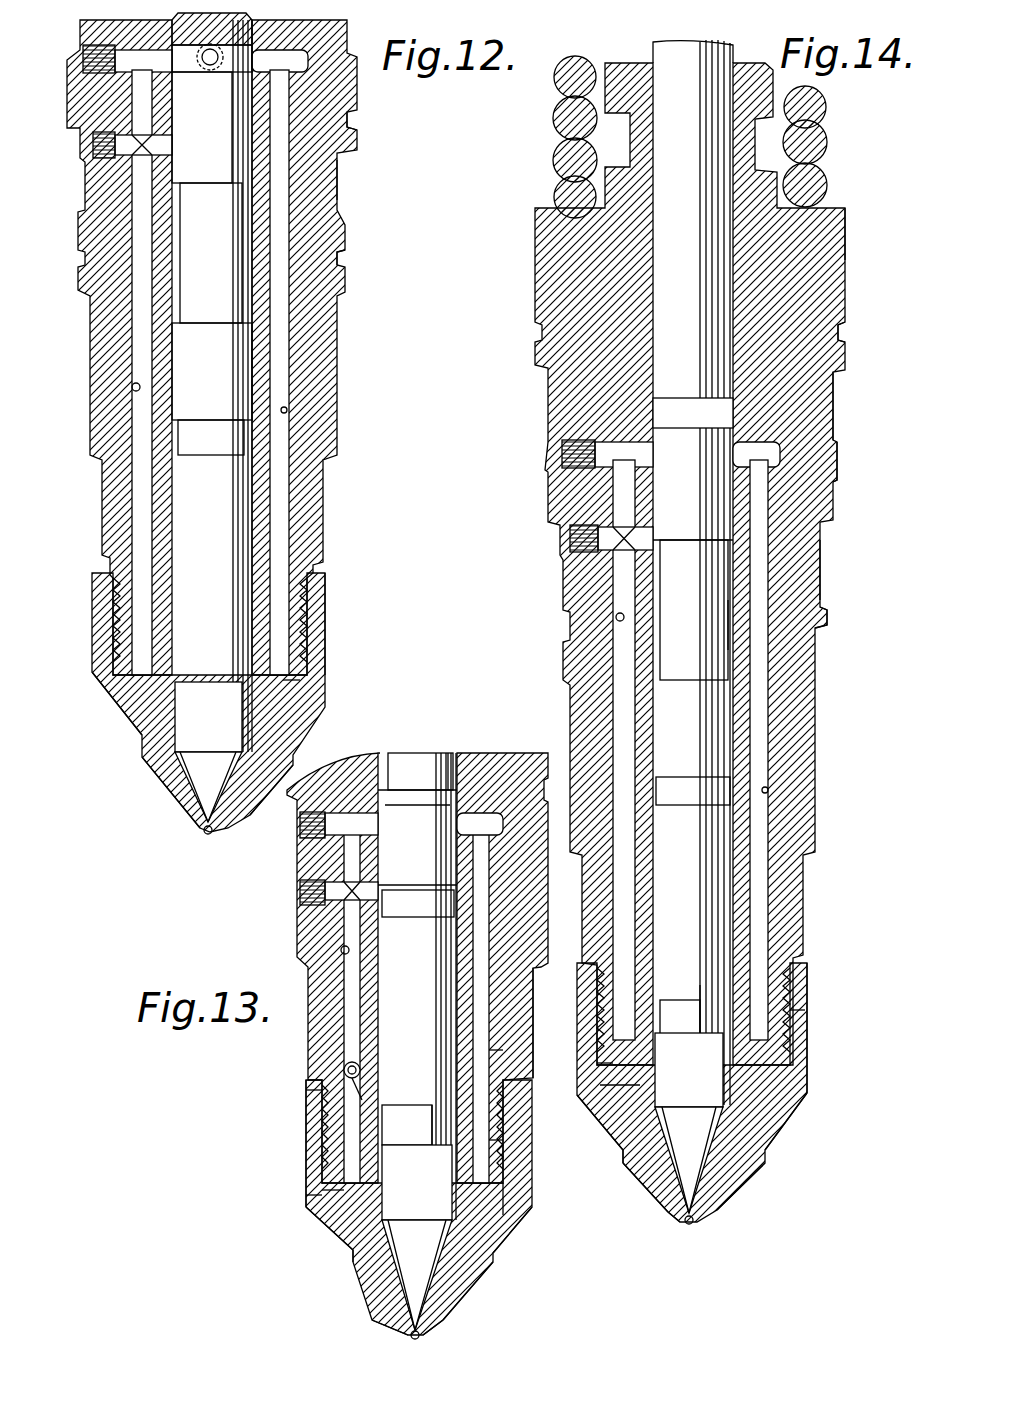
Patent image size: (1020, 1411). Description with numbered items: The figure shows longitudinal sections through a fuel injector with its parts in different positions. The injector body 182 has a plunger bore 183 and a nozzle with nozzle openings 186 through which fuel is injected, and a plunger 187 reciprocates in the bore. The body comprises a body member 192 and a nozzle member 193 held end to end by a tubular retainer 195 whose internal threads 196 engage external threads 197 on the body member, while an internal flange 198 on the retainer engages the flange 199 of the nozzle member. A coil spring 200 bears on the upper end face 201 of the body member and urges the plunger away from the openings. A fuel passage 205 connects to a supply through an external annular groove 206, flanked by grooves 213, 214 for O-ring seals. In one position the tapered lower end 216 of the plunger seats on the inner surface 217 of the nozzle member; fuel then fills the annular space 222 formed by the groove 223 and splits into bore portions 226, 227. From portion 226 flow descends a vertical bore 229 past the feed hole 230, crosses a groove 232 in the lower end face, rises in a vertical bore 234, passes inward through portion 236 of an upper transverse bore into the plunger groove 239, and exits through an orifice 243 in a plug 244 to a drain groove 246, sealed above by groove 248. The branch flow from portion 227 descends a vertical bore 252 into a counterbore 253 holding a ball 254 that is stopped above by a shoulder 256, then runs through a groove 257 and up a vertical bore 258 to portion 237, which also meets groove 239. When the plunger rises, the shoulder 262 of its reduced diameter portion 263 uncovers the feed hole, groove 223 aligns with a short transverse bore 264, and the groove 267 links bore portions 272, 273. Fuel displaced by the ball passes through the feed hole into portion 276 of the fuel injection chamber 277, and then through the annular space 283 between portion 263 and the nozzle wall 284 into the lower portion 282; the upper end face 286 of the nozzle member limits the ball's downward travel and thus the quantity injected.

In FIG. 12, the injector body 182 is at (338, 362).
In FIG. 14, the injector body 182 is at (818, 750).
In FIG. 13, the injector body 182 is at (505, 745).
In FIG. 12, the plunger bore 183 is at (177, 607).
In FIG. 14, the plunger bore 183 is at (655, 313).
In FIG. 13, the plunger bore 183 is at (390, 1030).
In FIG. 12, the nozzle openings 186 is at (205, 830).
In FIG. 14, the nozzle openings 186 is at (688, 1226).
In FIG. 13, the nozzle openings 186 is at (410, 1335).
In FIG. 12, the plunger 187 is at (262, 530).
In FIG. 14, the plunger 187 is at (807, 750).
In FIG. 13, the plunger 187 is at (500, 1025).
In FIG. 12, the body member 192 is at (105, 215).
In FIG. 14, the body member 192 is at (545, 388).
In FIG. 13, the body member 192 is at (320, 1005).
In FIG. 12, the nozzle member 193 is at (143, 785).
In FIG. 14, the nozzle member 193 is at (650, 1185).
In FIG. 13, the nozzle member 193 is at (475, 1300).
In FIG. 12, the tubular retainer 195 is at (320, 660).
In FIG. 14, the tubular retainer 195 is at (795, 1050).
In FIG. 13, the tubular retainer 195 is at (322, 1190).
In FIG. 12, the internal threads 196 is at (107, 650).
In FIG. 14, the internal threads 196 is at (790, 1040).
In FIG. 13, the internal threads 196 is at (306, 1140).
In FIG. 12, the external threads 197 is at (300, 648).
In FIG. 14, the external threads 197 is at (790, 1070).
In FIG. 13, the external threads 197 is at (322, 1152).
In FIG. 12, the internal flange 198 is at (130, 730).
In FIG. 14, the internal flange 198 is at (778, 1120).
In FIG. 13, the internal flange 198 is at (330, 1230).
In FIG. 12, the flange 199 is at (130, 690).
In FIG. 14, the flange 199 is at (790, 1085).
In FIG. 13, the flange 199 is at (503, 1200).
In FIG. 14, the coil spring 200 is at (555, 120).
In FIG. 14, the upper end face 201 is at (848, 212).
In FIG. 13, the fuel passage 205 is at (505, 945).
In FIG. 12, the external annular groove 206 is at (338, 175).
In FIG. 14, the external annular groove 206 is at (820, 573).
In FIG. 12, the annular groove 213 is at (345, 256).
In FIG. 14, the annular groove 213 is at (825, 652).
In FIG. 12, the annular groove 214 is at (357, 100).
In FIG. 14, the annular groove 214 is at (840, 495).
In FIG. 12, the tapered lower end 216 is at (205, 775).
In FIG. 14, the tapered lower end 216 is at (720, 1170).
In FIG. 13, the tapered lower end 216 is at (405, 1245).
In FIG. 12, the inner surface 217 is at (245, 817).
In FIG. 14, the inner surface 217 is at (738, 1200).
In FIG. 13, the inner surface 217 is at (455, 1318).
In FIG. 12, the annular space 222 is at (182, 208).
In FIG. 14, the annular space 222 is at (662, 585).
In FIG. 13, the annular space 222 is at (388, 760).
In FIG. 12, the annular groove 223 is at (243, 230).
In FIG. 14, the annular groove 223 is at (725, 612).
In FIG. 13, the annular groove 223 is at (448, 758).
In FIG. 13, the transverse bore portion 226 is at (417, 800).
In FIG. 13, the transverse bore portion 227 is at (400, 822).
In FIG. 13, the vertical bore 229 is at (492, 1055).
In FIG. 13, the feed hole 230 is at (503, 1148).
In FIG. 12, the groove 232 is at (290, 685).
In FIG. 14, the groove 232 is at (800, 1018).
In FIG. 12, the vertical bore 234 is at (287, 410).
In FIG. 14, the vertical bore 234 is at (768, 790).
In FIG. 12, the transverse bore portion 236 is at (300, 50).
In FIG. 14, the transverse bore portion 236 is at (760, 450).
In FIG. 12, the transverse bore portion 237 is at (135, 50).
In FIG. 14, the transverse bore portion 237 is at (590, 445).
In FIG. 13, the transverse bore portion 237 is at (339, 825).
In FIG. 12, the annular groove 239 is at (202, 127).
In FIG. 14, the annular groove 239 is at (700, 400).
In FIG. 12, the orifice 243 is at (222, 70).
In FIG. 12, the plug 244 is at (212, 29).
In FIG. 14, the groove 246 is at (840, 430).
In FIG. 14, the groove 248 is at (842, 340).
In FIG. 13, the vertical bore 252 is at (343, 950).
In FIG. 13, the counterbore 253 is at (306, 1090).
In FIG. 13, the ball 254 is at (365, 1088).
In FIG. 13, the shoulder 256 is at (345, 1068).
In FIG. 13, the groove 257 is at (306, 1195).
In FIG. 12, the vertical bore 258 is at (132, 387).
In FIG. 14, the vertical bore 258 is at (616, 617).
In FIG. 14, the shoulder 262 is at (680, 1012).
In FIG. 13, the shoulder 262 is at (380, 1165).
In FIG. 12, the reduced diameter portion 263 is at (208, 752).
In FIG. 14, the reduced diameter portion 263 is at (689, 1123).
In FIG. 13, the reduced diameter portion 263 is at (417, 1237).
In FIG. 12, the short transverse bore 264 is at (172, 143).
In FIG. 14, the short transverse bore 264 is at (650, 533).
In FIG. 13, the short transverse bore 264 is at (339, 892).
In FIG. 12, the annular groove 267 is at (243, 455).
In FIG. 14, the annular groove 267 is at (712, 805).
In FIG. 13, the annular groove 267 is at (440, 917).
In FIG. 13, the transverse bore portion 272 is at (480, 893).
In FIG. 13, the transverse bore portion 273 is at (398, 885).
In FIG. 14, the chamber portion 276 is at (710, 1000).
In FIG. 13, the chamber portion 276 is at (430, 1145).
In FIG. 14, the fuel injection chamber 277 is at (675, 1210).
In FIG. 13, the fuel injection chamber 277 is at (395, 1290).
In FIG. 14, the lower chamber portion 282 is at (730, 1195).
In FIG. 13, the lower chamber portion 282 is at (480, 1285).
In FIG. 14, the annular space 283 is at (623, 1090).
In FIG. 13, the annular space 283 is at (493, 1235).
In FIG. 14, the wall 284 is at (760, 1150).
In FIG. 13, the wall 284 is at (355, 1255).
In FIG. 14, the upper end face 286 is at (598, 1063).
In FIG. 13, the upper end face 286 is at (340, 1195).